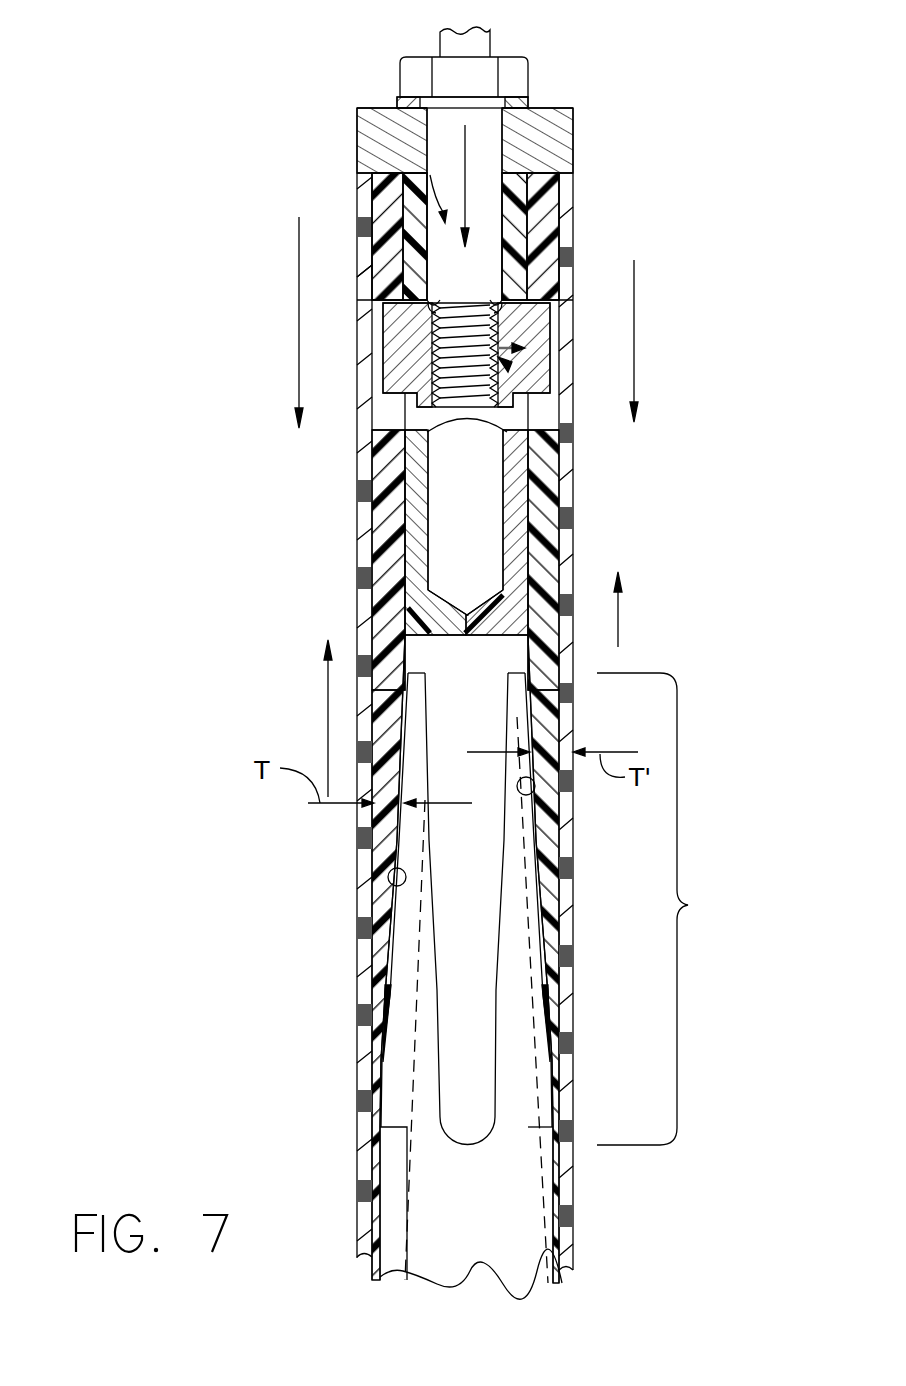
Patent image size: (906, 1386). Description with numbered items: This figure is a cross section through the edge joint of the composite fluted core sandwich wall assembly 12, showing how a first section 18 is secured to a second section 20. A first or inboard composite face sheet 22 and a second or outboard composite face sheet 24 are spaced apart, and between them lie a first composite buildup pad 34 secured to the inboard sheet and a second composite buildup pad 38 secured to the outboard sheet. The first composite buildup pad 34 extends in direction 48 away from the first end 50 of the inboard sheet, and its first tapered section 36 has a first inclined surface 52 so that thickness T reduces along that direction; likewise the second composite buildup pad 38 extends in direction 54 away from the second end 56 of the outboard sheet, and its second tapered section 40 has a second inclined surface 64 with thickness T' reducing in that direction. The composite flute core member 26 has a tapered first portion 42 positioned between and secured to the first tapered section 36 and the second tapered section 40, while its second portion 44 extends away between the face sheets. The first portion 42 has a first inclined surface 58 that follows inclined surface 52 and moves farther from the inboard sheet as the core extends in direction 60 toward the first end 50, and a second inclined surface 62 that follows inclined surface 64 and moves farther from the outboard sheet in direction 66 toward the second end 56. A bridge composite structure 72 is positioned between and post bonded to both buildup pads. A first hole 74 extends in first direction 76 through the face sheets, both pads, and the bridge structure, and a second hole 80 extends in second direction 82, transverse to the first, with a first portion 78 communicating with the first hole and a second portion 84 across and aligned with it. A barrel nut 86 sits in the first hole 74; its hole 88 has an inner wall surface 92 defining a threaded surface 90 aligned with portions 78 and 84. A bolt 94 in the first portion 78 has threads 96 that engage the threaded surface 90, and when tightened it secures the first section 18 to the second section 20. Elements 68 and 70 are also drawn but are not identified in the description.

The composite fluted core sandwich wall assembly 12 is at (598, 458).
The first section 18 is at (598, 711).
The second section 20 is at (598, 123).
The first or inboard composite face sheet 22 is at (360, 462).
The second or outboard composite face sheet 24 is at (575, 572).
The composite flute core member 26 is at (515, 1185).
The first composite buildup pad 34 is at (390, 567).
The first tapered section 36 is at (380, 962).
The second composite buildup pad 38 is at (560, 486).
The second tapered section 40 is at (555, 900).
The tapered first portion 42 is at (690, 904).
The second portion 44 is at (345, 1232).
The direction 48 is at (299, 265).
The first end 50 is at (368, 180).
The first inclined surface 52 is at (378, 887).
The direction 54 is at (634, 310).
The second end 56 is at (563, 183).
The first inclined surface 58 is at (377, 1033).
The direction 60 is at (328, 730).
The second inclined surface 62 is at (565, 1035).
The second inclined surface 64 is at (520, 790).
The direction 66 is at (618, 618).
The left jaw 68 is at (392, 957).
The central cavity 70 is at (547, 970).
The bridge composite structure 72 is at (513, 268).
The first hole 74 is at (398, 323).
The first direction 76 is at (493, 335).
The first portion of second hole 78 is at (440, 253).
The second hole 80 is at (427, 167).
The second direction 82 is at (467, 138).
The second portion of second hole 84 is at (490, 515).
The barrel nut 86 is at (525, 352).
The hole 88 is at (432, 362).
The threaded surface 90 is at (432, 395).
The inner wall surface 92 is at (430, 380).
The bolt 94 is at (452, 83).
The threads 96 is at (517, 368).